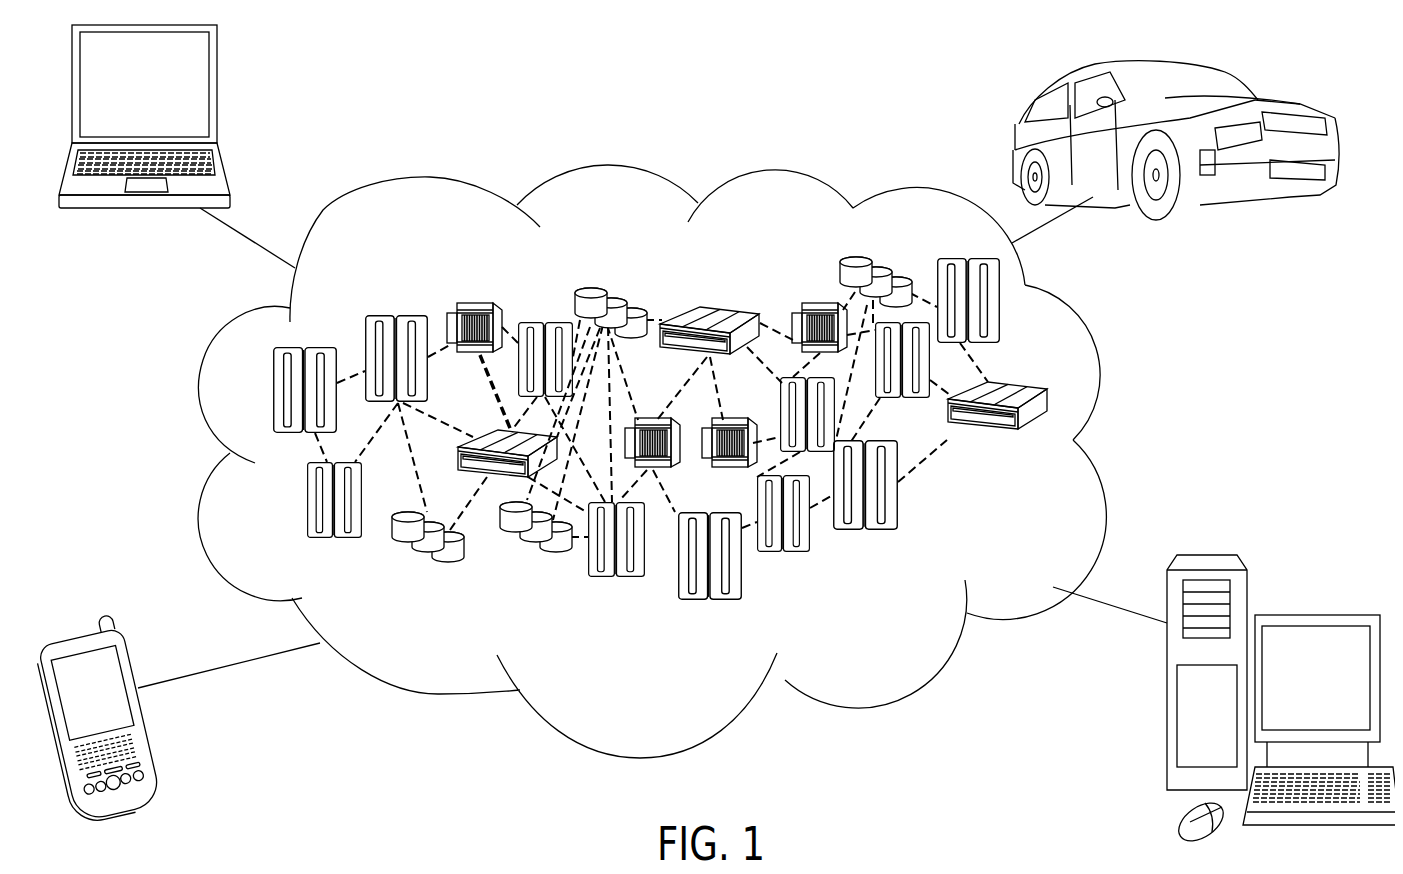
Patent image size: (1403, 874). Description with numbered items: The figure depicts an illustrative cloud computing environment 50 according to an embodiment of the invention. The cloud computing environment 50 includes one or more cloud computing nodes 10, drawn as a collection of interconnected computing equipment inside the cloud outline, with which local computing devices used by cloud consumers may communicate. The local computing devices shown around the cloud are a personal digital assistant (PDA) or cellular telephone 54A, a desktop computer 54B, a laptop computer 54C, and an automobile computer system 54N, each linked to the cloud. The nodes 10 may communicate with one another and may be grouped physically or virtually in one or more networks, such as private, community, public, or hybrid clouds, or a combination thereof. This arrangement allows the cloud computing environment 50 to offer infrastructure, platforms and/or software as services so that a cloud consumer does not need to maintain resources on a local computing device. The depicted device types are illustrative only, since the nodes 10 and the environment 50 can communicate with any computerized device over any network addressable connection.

The cloud computing environment 50 is at (1098, 360).
The cloud computing nodes 10 is at (1082, 462).
The personal digital assistant (PDA) or cellular telephone 54A is at (152, 727).
The desktop computer 54B is at (1318, 615).
The laptop computer 54C is at (217, 85).
The automobile computer system 54N is at (1013, 133).